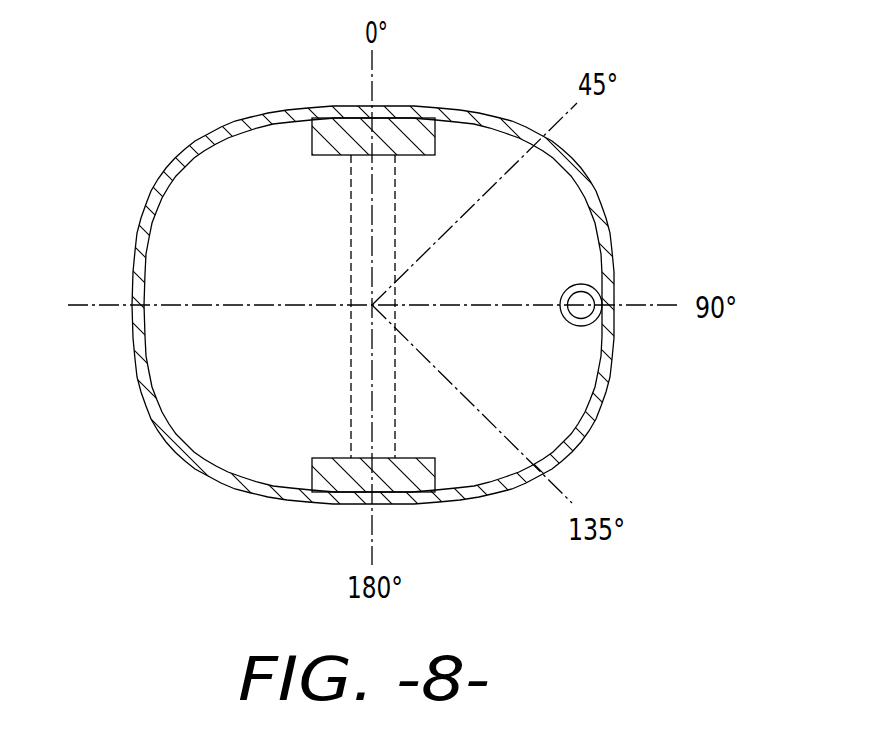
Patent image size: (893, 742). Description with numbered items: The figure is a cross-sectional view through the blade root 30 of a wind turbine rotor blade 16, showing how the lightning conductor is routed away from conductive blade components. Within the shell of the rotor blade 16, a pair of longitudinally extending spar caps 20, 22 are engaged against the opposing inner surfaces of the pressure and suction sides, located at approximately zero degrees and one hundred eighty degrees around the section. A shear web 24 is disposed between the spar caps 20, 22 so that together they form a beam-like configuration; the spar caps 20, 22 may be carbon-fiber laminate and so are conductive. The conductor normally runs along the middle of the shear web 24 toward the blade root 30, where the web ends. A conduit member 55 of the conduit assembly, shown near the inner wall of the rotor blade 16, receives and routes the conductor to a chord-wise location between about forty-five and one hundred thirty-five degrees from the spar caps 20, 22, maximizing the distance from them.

The rotor blade 16 is at (446, 371).
The spar cap 20 is at (397, 133).
The spar cap 22 is at (332, 482).
The shear web 24 is at (350, 255).
The blade root 30 is at (608, 227).
The conduit member 55 is at (582, 283).